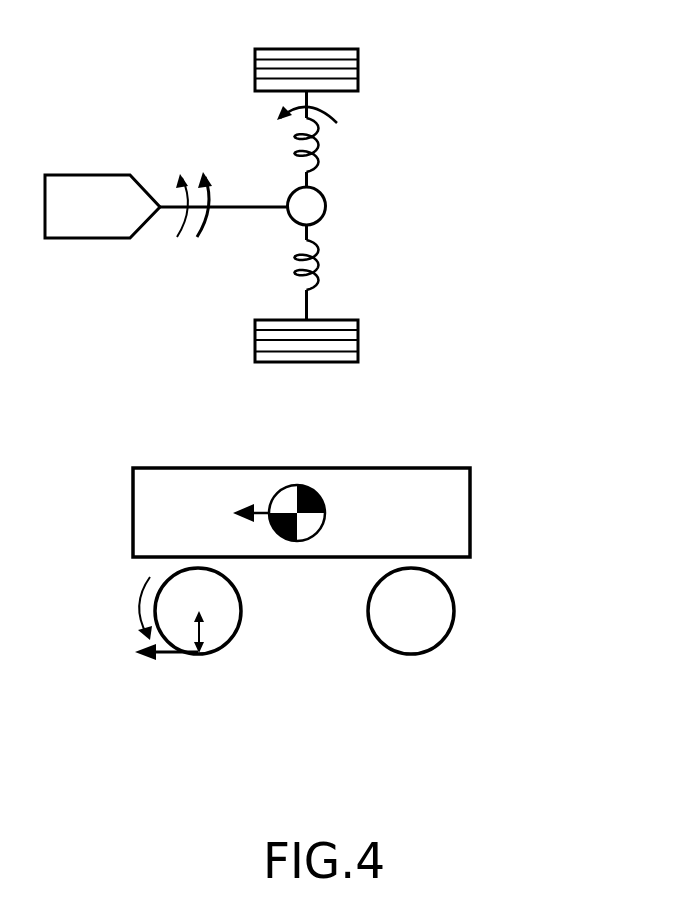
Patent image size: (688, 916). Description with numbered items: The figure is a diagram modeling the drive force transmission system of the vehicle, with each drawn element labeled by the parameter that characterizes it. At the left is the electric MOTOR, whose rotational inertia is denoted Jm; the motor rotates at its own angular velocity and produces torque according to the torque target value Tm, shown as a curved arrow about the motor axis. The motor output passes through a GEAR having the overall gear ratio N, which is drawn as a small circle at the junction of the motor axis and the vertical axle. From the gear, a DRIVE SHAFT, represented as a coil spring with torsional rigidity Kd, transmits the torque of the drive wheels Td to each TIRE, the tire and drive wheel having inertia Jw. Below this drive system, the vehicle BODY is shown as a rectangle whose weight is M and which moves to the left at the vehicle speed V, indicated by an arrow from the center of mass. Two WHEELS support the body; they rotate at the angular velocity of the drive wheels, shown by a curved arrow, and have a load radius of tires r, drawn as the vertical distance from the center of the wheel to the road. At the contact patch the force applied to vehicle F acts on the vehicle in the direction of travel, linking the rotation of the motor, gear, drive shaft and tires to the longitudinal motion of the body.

The tire TIRE is at (341, 205).
The inertia of drive wheels Jw is at (307, 28).
The drive shaft DRIVE SHAFT is at (393, 205).
The torque of drive wheels Td is at (293, 132).
The torsional rigidity of drive system Kd is at (345, 146).
The gear GEAR is at (328, 204).
The overall gear ratio N is at (339, 230).
The electric motor MOTOR is at (166, 191).
The inertia of electric motor Jm is at (94, 208).
The torque target value Tm is at (204, 219).
The vehicle body BODY is at (301, 496).
The weight of vehicle M is at (341, 513).
The speed of vehicle V is at (230, 515).
The drive wheels WHEELS is at (368, 605).
The load radius of tires r is at (191, 632).
The force applied to vehicle F is at (148, 653).